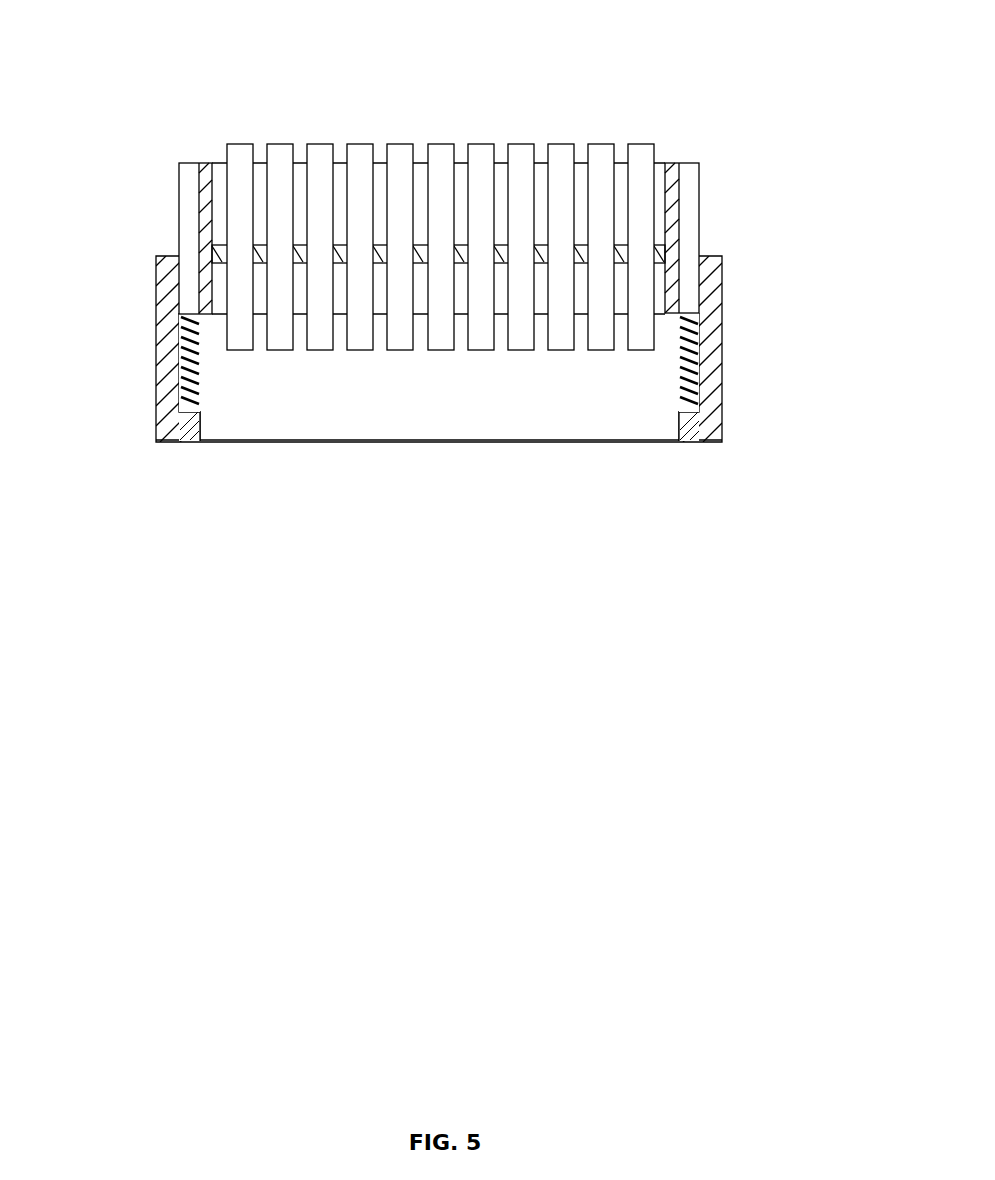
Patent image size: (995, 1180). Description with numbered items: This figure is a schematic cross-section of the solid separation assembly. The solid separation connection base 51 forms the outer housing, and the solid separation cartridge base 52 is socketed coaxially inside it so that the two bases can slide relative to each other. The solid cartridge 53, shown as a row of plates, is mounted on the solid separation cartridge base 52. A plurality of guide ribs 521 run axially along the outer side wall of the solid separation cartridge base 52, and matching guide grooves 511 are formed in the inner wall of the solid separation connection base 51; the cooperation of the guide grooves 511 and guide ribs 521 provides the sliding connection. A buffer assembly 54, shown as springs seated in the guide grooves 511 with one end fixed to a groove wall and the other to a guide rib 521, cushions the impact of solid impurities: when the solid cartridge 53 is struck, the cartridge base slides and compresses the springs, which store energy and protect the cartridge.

The solid separation connection base 51 is at (379, 349).
The guide groove 511 is at (439, 465).
The solid separation cartridge base 52 is at (381, 167).
The guide rib 521 is at (762, 197).
The solid cartridge 53 is at (438, 189).
The buffer assembly 54 is at (519, 365).